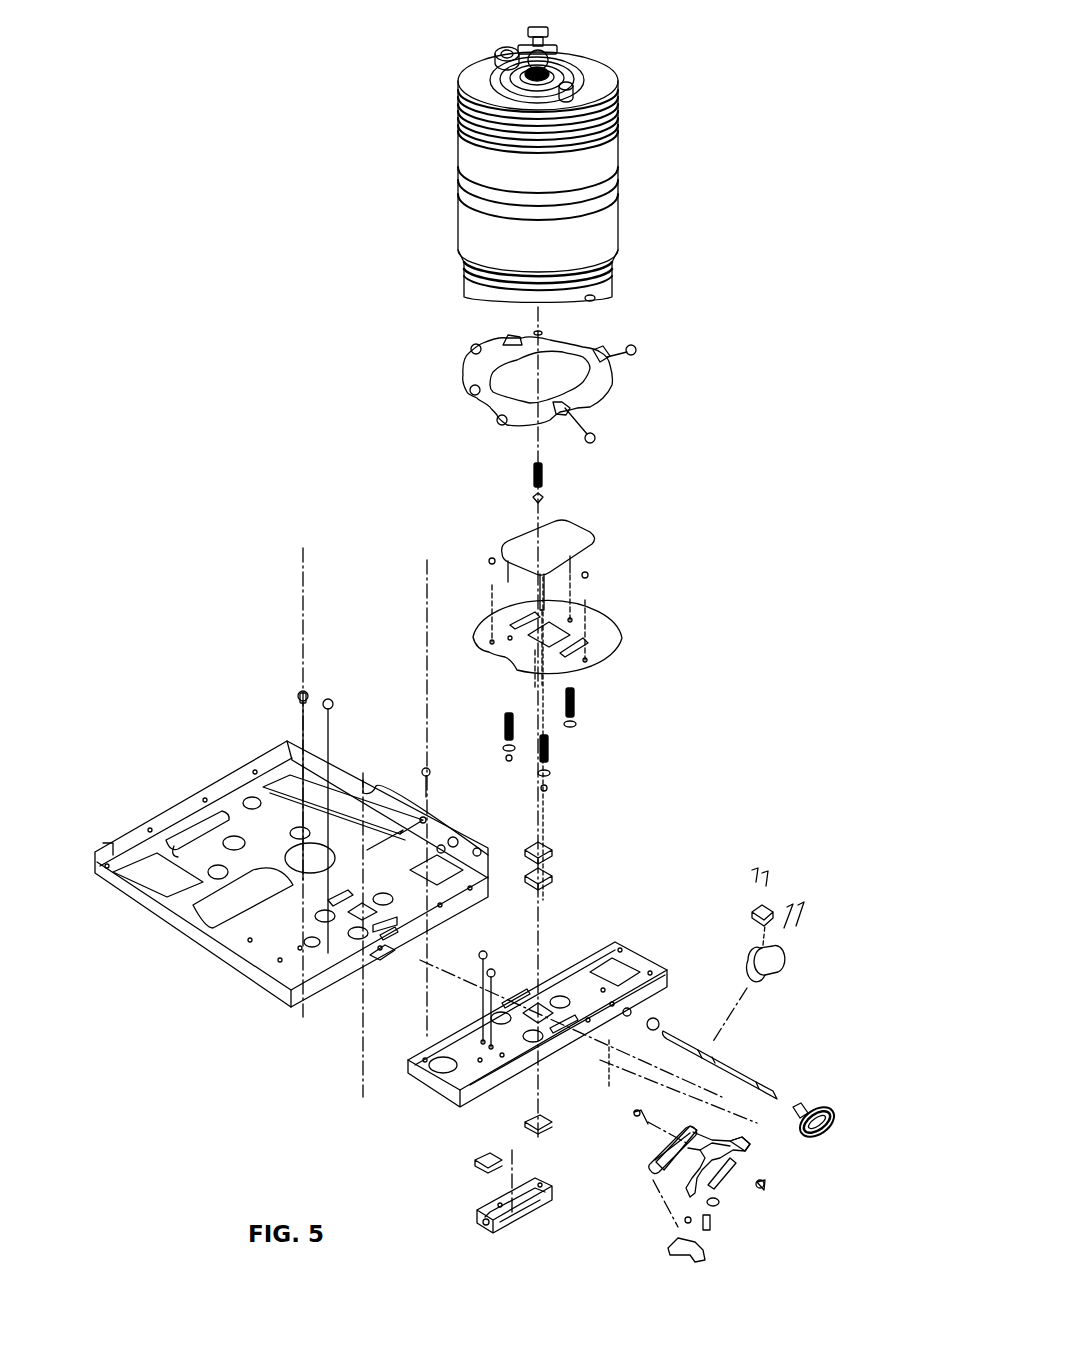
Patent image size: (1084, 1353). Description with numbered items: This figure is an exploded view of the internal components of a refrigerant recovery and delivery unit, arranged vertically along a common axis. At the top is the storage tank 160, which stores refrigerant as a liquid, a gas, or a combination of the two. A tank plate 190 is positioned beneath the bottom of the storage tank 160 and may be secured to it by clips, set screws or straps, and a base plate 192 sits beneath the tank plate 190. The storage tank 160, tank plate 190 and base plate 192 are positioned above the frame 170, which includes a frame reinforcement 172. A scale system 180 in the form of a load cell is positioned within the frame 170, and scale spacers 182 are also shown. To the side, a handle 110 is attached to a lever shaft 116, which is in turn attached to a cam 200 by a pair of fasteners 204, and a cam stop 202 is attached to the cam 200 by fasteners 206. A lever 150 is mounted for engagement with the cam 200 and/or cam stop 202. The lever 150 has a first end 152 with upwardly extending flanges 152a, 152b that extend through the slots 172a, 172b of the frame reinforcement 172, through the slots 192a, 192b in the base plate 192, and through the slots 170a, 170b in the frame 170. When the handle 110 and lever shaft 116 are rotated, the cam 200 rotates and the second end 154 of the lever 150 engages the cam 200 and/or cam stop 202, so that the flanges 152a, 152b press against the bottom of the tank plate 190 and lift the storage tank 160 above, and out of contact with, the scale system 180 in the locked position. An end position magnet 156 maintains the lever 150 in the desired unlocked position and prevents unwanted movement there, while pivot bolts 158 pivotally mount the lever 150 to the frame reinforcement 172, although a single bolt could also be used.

The storage tank 160 is at (596, 160).
The tank plate 190 is at (592, 388).
The base plate 192 is at (600, 618).
The slot 192a is at (588, 643).
The slot 192b is at (520, 614).
The frame 170 is at (242, 822).
The slot 170a is at (320, 893).
The slot 170b is at (390, 930).
The frame reinforcement 172 is at (573, 985).
The slot 172a is at (512, 997).
The slot 172b is at (567, 1027).
The fasteners 206 is at (757, 868).
The pair of fasteners 204 is at (796, 907).
The cam stop 202 is at (753, 912).
The cam 200 is at (780, 965).
The lever shaft 116 is at (747, 1072).
The handle 110 is at (833, 1125).
The lever 150 is at (690, 1140).
The second end 154 is at (740, 1142).
The first end 152 is at (662, 1175).
The upwardly extending flange 152a is at (655, 1152).
The upwardly extending flange 152b is at (703, 1182).
The pivot bolts 158 is at (634, 1122).
The end position magnet 156 is at (705, 1250).
The scale spacers 182 is at (527, 1123).
The scale system 180 is at (527, 1210).